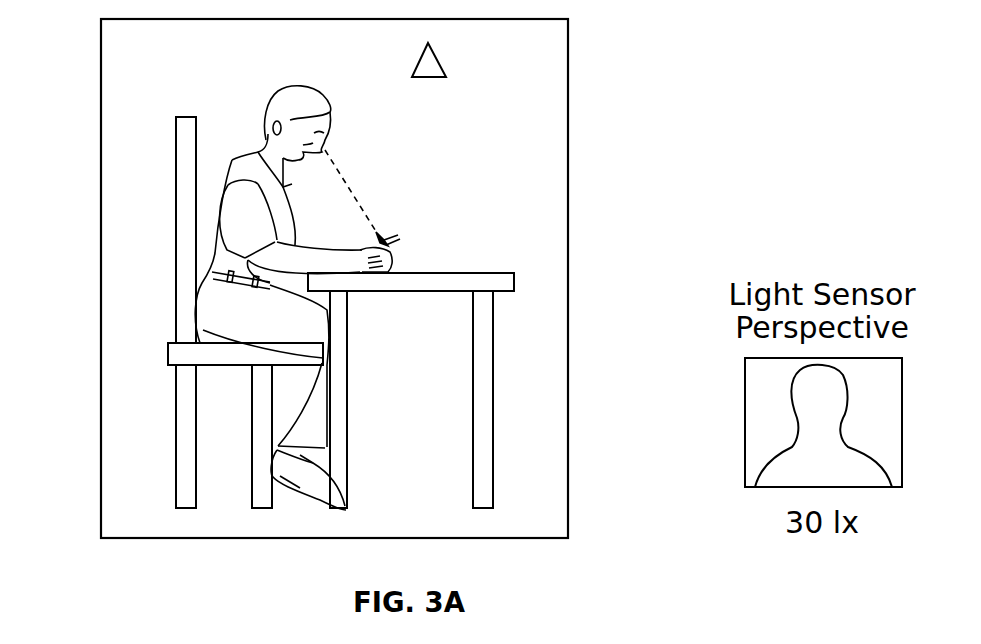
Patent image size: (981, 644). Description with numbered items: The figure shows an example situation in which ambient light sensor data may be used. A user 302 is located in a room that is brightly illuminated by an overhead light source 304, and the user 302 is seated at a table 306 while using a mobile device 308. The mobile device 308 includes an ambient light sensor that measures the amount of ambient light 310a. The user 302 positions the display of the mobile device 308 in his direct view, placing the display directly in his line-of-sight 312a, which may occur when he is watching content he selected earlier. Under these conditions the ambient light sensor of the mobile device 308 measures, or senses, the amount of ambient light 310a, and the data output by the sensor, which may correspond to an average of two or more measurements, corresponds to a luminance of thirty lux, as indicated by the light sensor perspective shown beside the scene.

The user 302 is at (260, 298).
The overhead light source 304 is at (428, 78).
The table 306 is at (515, 281).
The mobile device 308 is at (390, 258).
The ambient light 310a is at (389, 243).
The line-of-sight 312a is at (343, 181).